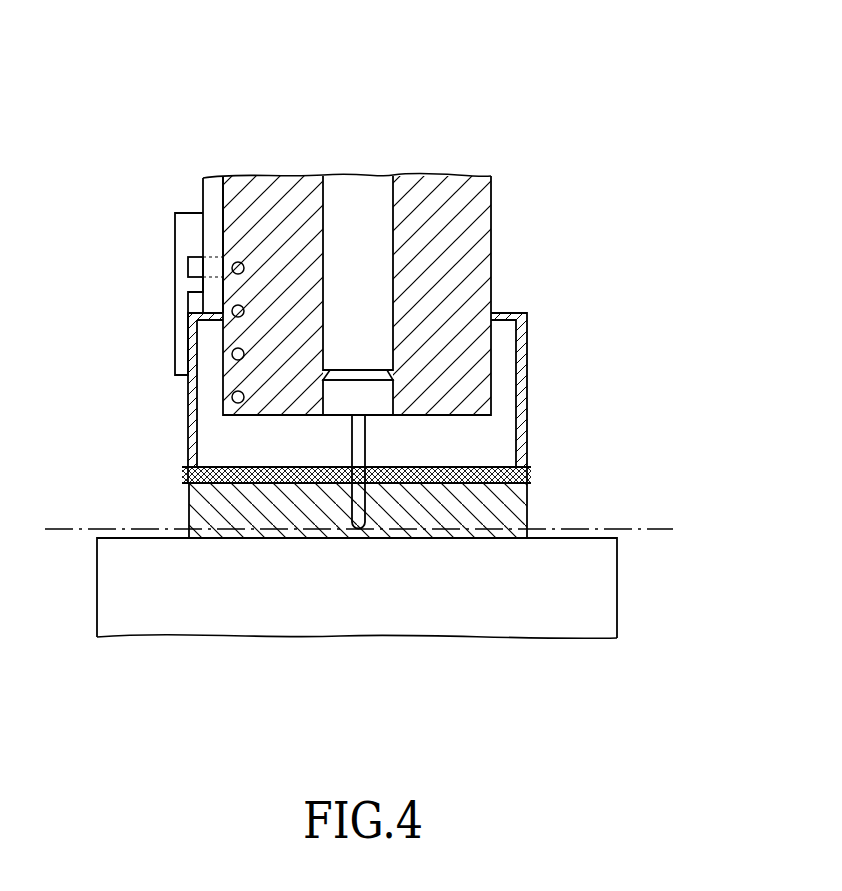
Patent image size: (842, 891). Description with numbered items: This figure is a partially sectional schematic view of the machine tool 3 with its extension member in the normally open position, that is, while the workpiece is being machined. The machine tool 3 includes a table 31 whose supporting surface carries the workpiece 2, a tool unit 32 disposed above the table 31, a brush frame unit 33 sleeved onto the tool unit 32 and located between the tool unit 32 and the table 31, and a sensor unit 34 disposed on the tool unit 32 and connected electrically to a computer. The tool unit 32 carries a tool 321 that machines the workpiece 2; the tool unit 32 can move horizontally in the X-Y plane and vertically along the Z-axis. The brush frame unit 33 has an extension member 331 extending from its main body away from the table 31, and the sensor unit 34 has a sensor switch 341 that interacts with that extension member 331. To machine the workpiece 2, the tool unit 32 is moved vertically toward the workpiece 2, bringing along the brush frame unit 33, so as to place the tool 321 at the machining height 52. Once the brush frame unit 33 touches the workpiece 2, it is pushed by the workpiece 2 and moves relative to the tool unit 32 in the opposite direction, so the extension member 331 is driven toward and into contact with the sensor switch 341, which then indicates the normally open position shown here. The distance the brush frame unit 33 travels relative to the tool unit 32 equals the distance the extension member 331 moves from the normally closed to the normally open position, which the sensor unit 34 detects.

The machine tool 3 is at (422, 144).
The tool unit 32 is at (491, 238).
The tool 321 is at (357, 443).
The brush frame unit 33 is at (527, 360).
The extension member 331 is at (175, 315).
The sensor unit 34 is at (203, 197).
The sensor switch 341 is at (195, 267).
The workpiece 2 is at (527, 500).
The machining height 52 is at (655, 530).
The table 31 is at (601, 601).